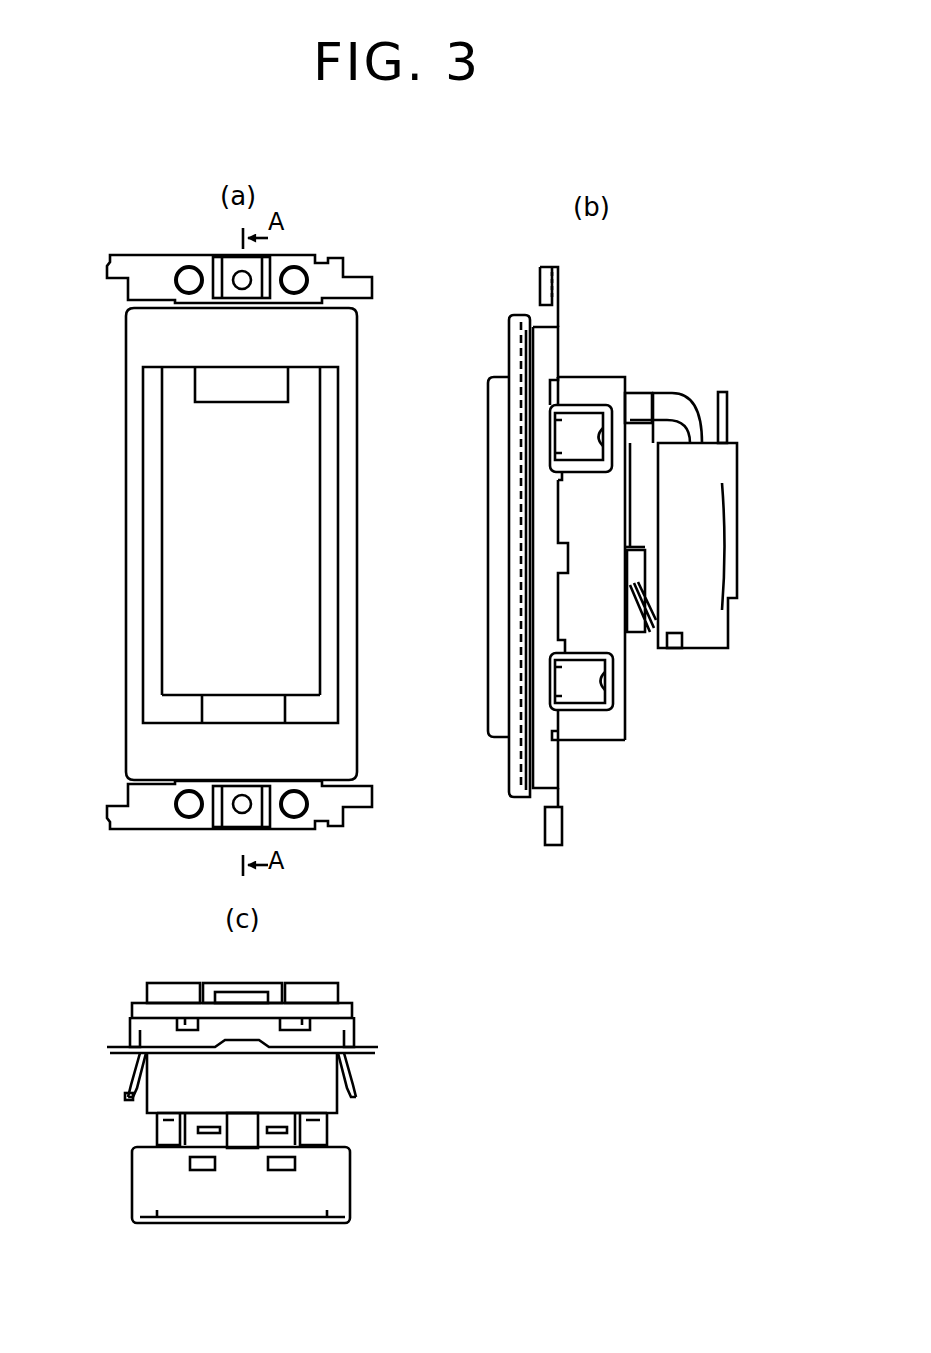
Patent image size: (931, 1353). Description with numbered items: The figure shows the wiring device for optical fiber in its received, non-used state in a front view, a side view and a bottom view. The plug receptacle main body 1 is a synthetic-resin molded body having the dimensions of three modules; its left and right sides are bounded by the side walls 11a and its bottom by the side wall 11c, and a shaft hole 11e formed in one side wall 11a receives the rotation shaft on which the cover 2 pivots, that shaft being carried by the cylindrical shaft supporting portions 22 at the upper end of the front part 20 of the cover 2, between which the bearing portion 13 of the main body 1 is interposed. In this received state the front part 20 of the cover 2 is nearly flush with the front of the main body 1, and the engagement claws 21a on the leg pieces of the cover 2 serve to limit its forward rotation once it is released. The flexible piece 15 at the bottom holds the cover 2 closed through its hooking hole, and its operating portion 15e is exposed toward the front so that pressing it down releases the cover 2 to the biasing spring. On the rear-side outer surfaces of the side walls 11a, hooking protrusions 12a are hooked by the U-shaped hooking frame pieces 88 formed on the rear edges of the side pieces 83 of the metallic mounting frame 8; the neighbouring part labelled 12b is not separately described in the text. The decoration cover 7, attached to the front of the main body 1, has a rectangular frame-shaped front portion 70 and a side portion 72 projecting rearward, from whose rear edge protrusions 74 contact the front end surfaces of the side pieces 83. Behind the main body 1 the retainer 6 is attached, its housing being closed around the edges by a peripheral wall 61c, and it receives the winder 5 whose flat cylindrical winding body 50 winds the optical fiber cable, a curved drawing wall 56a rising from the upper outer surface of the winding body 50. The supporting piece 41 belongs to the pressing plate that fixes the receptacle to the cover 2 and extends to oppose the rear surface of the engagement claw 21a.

The plug receptacle main body 1 is at (592, 746).
The cover 2 is at (178, 507).
The winder 5 is at (732, 396).
The retainer 6 is at (710, 489).
The decoration cover 7 is at (192, 594).
The mounting frame 8 is at (348, 261).
The side wall 11a is at (620, 738).
The side wall 11c is at (320, 1089).
The shaft hole 11e is at (502, 393).
The hooking protrusion 12a is at (573, 425).
The engaging projection 12b is at (669, 398).
The bearing portion 13 is at (257, 380).
The flexible piece 15 is at (218, 710).
The operating portion 15e is at (237, 710).
The front part 20 is at (157, 563).
The shaft supporting portion 22 is at (166, 377).
The engagement claw 21a is at (640, 597).
The supporting piece 41 is at (650, 595).
The winding body 50 is at (710, 433).
The drawing wall 56a is at (676, 396).
The peripheral wall 61c is at (712, 630).
The front portion 70 is at (338, 767).
The side portion 72 is at (517, 537).
The protrusion 74 is at (527, 630).
The side piece 83 is at (547, 595).
The hooking frame piece 88 is at (600, 430).